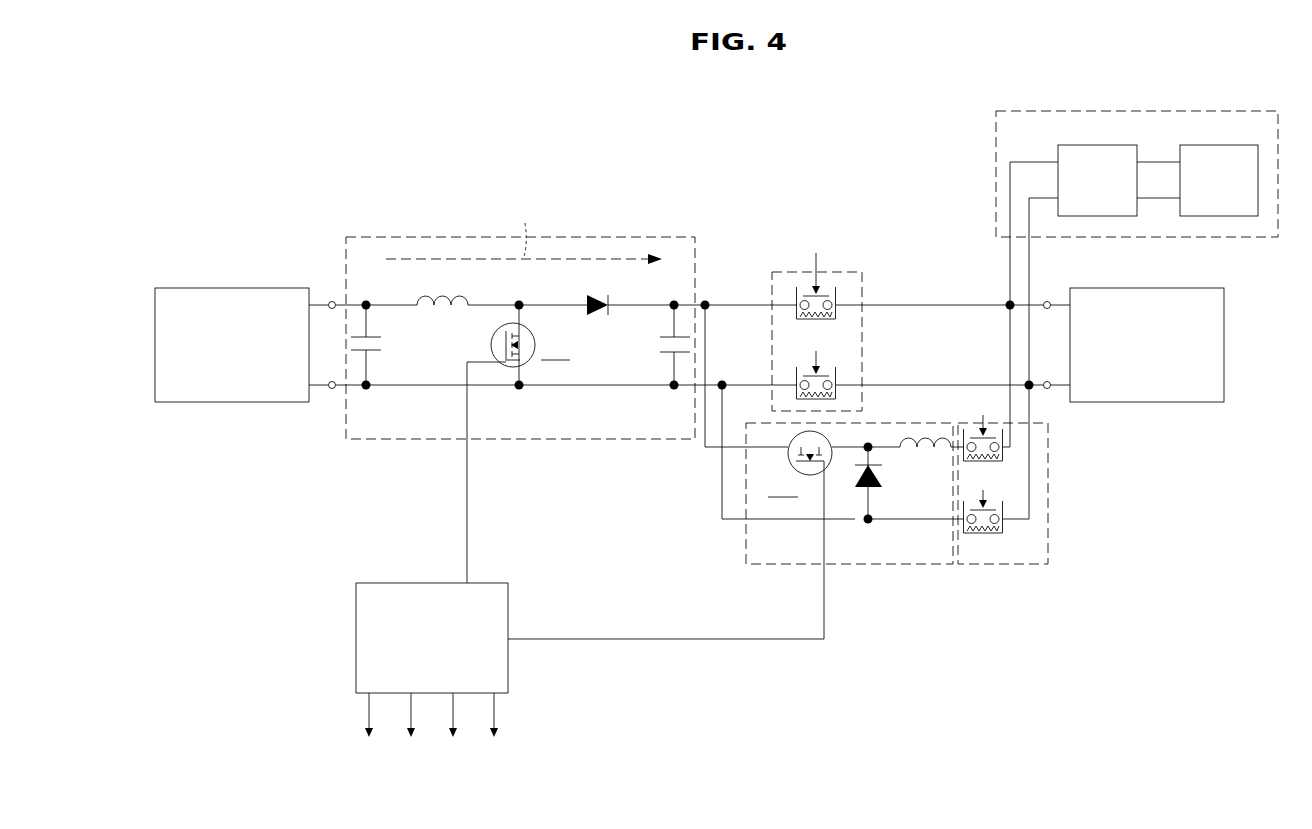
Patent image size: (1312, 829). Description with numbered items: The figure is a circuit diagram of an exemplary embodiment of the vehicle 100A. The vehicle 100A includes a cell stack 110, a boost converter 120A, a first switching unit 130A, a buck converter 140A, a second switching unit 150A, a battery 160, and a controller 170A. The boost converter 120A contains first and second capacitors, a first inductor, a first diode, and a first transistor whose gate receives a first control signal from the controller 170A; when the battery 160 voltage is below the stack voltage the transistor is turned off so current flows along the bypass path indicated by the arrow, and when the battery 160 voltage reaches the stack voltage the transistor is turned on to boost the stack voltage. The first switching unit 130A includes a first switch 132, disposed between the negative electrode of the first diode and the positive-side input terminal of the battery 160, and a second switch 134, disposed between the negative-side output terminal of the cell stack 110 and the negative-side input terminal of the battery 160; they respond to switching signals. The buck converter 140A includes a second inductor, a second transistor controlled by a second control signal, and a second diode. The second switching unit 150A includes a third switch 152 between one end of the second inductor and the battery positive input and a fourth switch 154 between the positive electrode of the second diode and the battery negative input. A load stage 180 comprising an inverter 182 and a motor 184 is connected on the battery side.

The vehicle 100A is at (716, 425).
The cell stack 110 is at (266, 289).
The boost converter 120A is at (640, 236).
The first switching unit 130A is at (778, 271).
The first switch 132 is at (838, 295).
The second switch 134 is at (838, 375).
The buck converter 140A is at (746, 543).
The second switching unit 150A is at (1022, 566).
The third switch 152 is at (1005, 456).
The fourth switch 154 is at (1005, 528).
The battery 160 is at (1181, 288).
The controller 170A is at (356, 640).
The load stage 180 is at (1215, 111).
The inverter 182 is at (1093, 145).
The motor 184 is at (1215, 145).